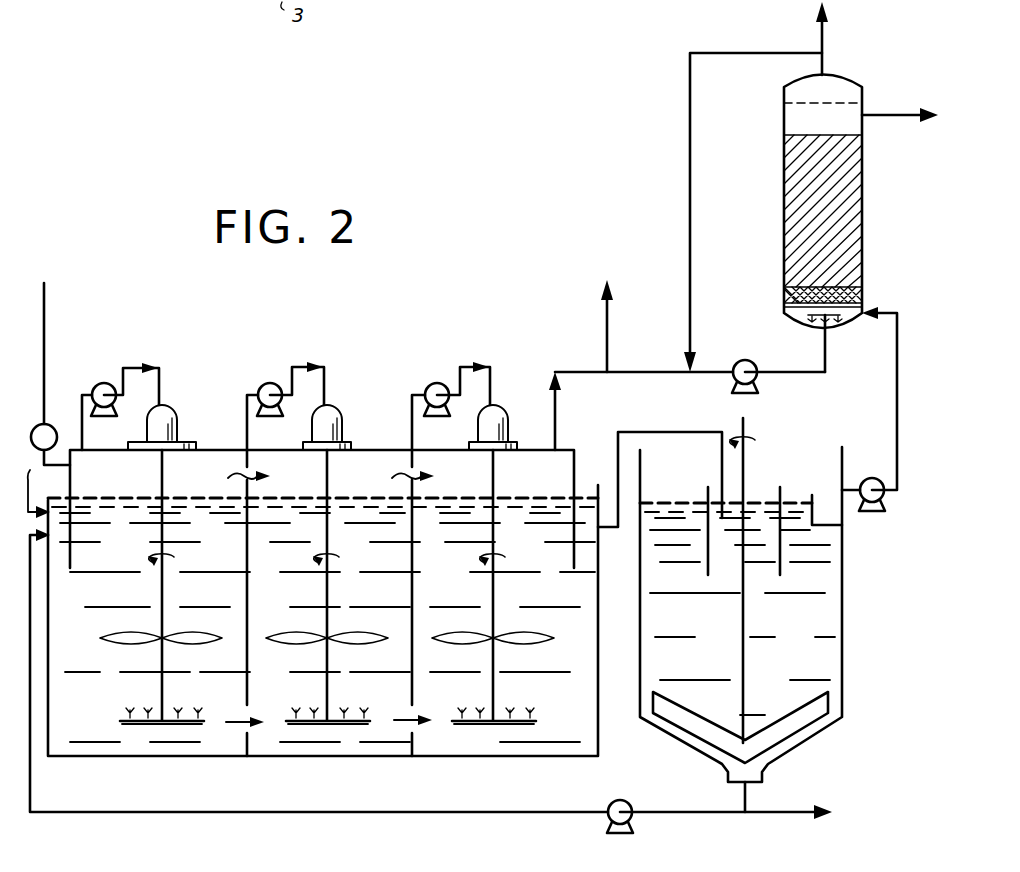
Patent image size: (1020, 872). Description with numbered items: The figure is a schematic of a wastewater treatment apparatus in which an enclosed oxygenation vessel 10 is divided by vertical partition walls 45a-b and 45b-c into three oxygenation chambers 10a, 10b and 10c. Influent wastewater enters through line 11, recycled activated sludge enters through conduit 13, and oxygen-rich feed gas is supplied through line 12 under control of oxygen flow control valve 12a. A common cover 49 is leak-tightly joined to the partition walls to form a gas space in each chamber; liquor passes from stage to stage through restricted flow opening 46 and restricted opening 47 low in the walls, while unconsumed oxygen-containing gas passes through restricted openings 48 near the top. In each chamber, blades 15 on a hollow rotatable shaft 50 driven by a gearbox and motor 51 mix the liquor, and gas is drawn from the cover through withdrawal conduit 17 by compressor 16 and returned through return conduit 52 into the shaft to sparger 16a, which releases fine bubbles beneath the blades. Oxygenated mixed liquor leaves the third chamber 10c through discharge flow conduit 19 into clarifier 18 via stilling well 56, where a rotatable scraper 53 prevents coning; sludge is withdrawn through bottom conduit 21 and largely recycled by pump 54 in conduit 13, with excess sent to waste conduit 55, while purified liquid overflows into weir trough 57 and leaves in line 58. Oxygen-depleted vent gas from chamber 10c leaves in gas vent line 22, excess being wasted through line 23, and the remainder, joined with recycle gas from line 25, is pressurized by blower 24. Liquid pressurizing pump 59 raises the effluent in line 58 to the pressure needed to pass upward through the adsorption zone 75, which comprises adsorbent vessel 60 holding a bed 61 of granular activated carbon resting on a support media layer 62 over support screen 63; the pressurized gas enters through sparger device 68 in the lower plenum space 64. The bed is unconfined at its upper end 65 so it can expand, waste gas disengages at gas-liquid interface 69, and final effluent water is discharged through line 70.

The enclosed oxygenation vessel 10 is at (47, 600).
The first oxygenation chamber 10a is at (81, 745).
The second oxygenation chamber 10b is at (270, 742).
The third oxygenation chamber 10c is at (434, 749).
The influent wastewater line 11 is at (836, 30).
The oxygen feed gas line 12 is at (44, 318).
The oxygen flow control valve 12a is at (84, 426).
The recycle activated sludge conduit 13 is at (424, 814).
The blades 15 is at (200, 636).
The compressor 16 is at (104, 383).
The sparger 16a is at (144, 726).
The withdrawal conduit 17 is at (76, 397).
The clarifier 18 is at (642, 610).
The discharge flow conduit 19 is at (660, 432).
The bottom conduit 21 is at (748, 798).
The gas vent line 22 is at (632, 372).
The excess vent gas waste line 23 is at (606, 333).
The blower 24 is at (740, 360).
The recycle gas line 25 is at (690, 148).
The first-second chamber common partition wall 45a-b is at (247, 648).
The second-third chamber common partition wall 45b-c is at (410, 645).
The restricted flow opening 46 is at (240, 735).
The restricted opening 47 is at (400, 738).
The restricted gas openings 48 is at (308, 472).
The common cover 49 is at (200, 440).
The rotatable hollow shaft 50 is at (164, 597).
The gearbox and motor 51 is at (170, 404).
The return conduit 52 is at (135, 368).
The rotatable scraper 53 is at (705, 730).
The sludge recycle pump 54 is at (628, 798).
The waste conduit 55 is at (777, 814).
The stilling well 56 is at (708, 490).
The weir trough 57 is at (818, 530).
The effluent line 58 is at (850, 493).
The liquid pressurizing pump 59 is at (870, 478).
The adsorbent vessel 60 is at (862, 222).
The activated carbon adsorbent bed 61 is at (800, 230).
The support media layer 62 is at (862, 294).
The support screen or grid 63 is at (862, 306).
The plenum space 64 is at (848, 320).
The upper end of adsorbent bed 65 is at (795, 135).
The sparger device 68 is at (828, 322).
The gas-liquid interface 69 is at (838, 100).
The final effluent line 70 is at (890, 116).
The adsorbent bed / adsorption zone 75 is at (774, 188).